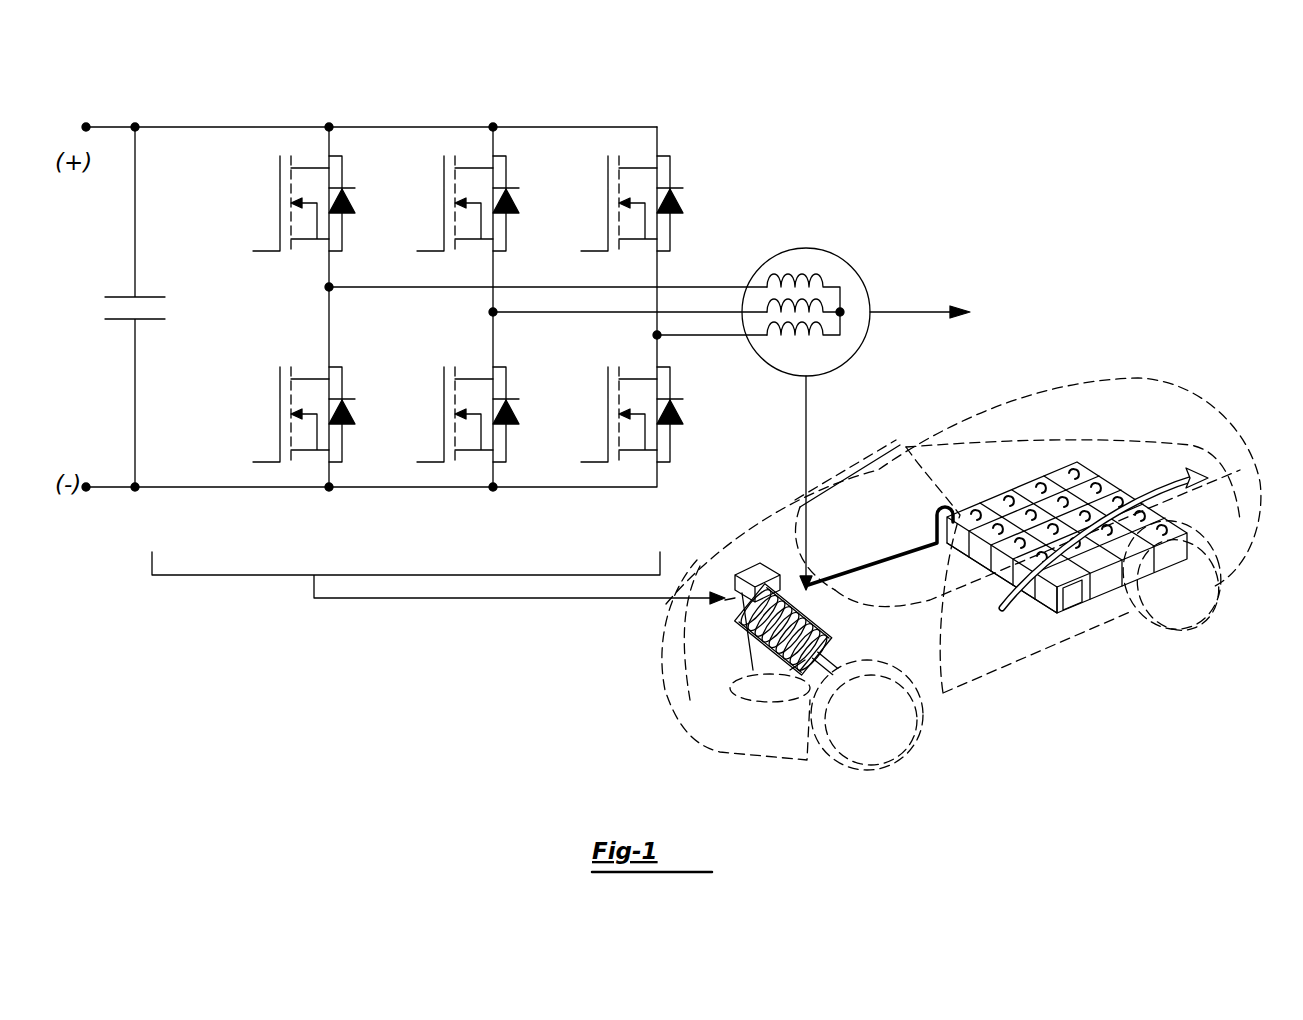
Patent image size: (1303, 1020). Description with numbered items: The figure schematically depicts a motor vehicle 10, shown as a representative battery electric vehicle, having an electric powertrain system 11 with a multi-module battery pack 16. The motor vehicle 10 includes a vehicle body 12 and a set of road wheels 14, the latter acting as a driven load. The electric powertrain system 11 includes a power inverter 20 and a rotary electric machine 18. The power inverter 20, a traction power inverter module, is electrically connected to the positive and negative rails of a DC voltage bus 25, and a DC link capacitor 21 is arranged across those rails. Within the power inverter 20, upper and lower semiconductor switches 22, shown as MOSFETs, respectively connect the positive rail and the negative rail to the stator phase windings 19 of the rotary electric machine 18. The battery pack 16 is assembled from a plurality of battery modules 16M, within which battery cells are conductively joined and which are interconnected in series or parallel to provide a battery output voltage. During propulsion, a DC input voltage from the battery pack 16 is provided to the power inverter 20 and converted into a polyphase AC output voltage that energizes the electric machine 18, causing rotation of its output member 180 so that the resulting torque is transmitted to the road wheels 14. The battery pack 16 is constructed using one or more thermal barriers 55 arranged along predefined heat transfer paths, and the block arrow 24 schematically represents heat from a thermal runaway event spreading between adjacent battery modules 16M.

The motor vehicle 10 is at (1197, 268).
The electric powertrain system 11 is at (730, 647).
The vehicle body 12 is at (1090, 390).
The road wheels 14 is at (890, 745).
The multi-module battery pack 16 is at (1243, 557).
The battery modules 16M is at (1048, 600).
The rotary electric machine 18 is at (806, 247).
The stator phase windings 19 is at (835, 277).
The output member 180 is at (920, 310).
The power inverter 20 is at (660, 94).
The DC link capacitor 21 is at (110, 289).
The semiconductor switches 22 is at (362, 194).
The block arrow 24 is at (1190, 470).
The DC voltage bus 25 is at (112, 126).
The thermal barrier 55 is at (1073, 603).